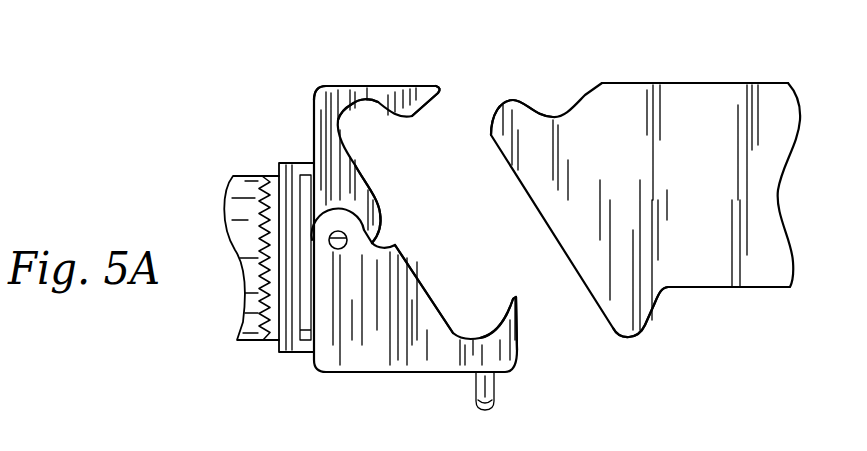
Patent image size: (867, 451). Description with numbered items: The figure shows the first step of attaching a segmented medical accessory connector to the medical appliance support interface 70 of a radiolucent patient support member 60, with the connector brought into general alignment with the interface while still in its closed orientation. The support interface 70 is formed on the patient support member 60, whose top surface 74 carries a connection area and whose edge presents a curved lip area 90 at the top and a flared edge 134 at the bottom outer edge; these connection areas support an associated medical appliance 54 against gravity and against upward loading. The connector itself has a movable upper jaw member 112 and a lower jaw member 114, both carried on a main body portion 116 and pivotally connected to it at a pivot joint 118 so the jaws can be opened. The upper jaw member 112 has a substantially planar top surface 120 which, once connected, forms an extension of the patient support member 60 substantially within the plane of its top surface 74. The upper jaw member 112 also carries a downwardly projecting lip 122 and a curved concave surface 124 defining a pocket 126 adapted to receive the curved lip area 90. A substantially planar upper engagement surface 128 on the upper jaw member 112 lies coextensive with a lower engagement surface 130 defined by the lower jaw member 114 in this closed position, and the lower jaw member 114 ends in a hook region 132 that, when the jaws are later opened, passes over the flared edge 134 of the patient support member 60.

The medical appliance 54 is at (248, 341).
The radiolucent patient support member 60 is at (713, 192).
The medical appliance support interface 70 is at (664, 197).
The top surface 74 is at (742, 83).
The curved lip area 90 is at (531, 94).
The movable upper jaw member 112 is at (320, 134).
The lower jaw member 114 is at (375, 362).
The main body portion 116 is at (288, 353).
The pivot joint 118 is at (346, 246).
The substantially planar top surface 120 is at (388, 85).
The downwardly projecting lip 122 is at (424, 126).
The curved concave surface 124 is at (368, 110).
The pocket 126 is at (351, 117).
The upper engagement surface 128 is at (378, 190).
The lower engagement surface 130 is at (438, 300).
The hook region 132 is at (524, 333).
The flared edge 134 is at (651, 338).